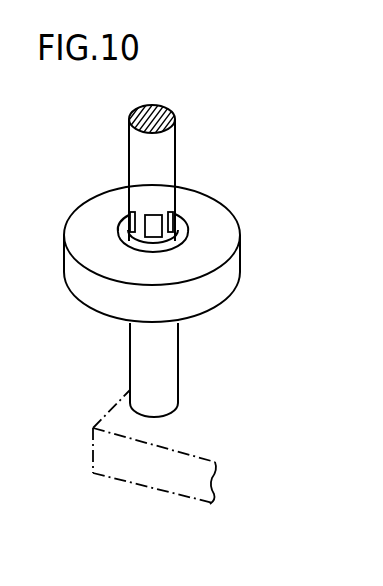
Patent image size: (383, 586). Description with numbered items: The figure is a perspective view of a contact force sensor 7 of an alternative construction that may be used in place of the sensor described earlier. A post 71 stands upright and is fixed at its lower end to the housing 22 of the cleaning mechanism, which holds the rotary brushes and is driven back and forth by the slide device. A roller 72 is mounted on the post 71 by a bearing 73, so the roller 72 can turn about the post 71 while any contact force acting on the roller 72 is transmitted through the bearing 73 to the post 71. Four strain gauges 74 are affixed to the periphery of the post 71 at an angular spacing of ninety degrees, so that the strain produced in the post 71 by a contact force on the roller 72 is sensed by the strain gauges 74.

The contact force sensor 7 is at (263, 106).
The post 71 is at (165, 157).
The roller 72 is at (223, 289).
The bearing 73 is at (189, 229).
The strain gauges 74 is at (154, 214).
The housing 22 is at (175, 492).